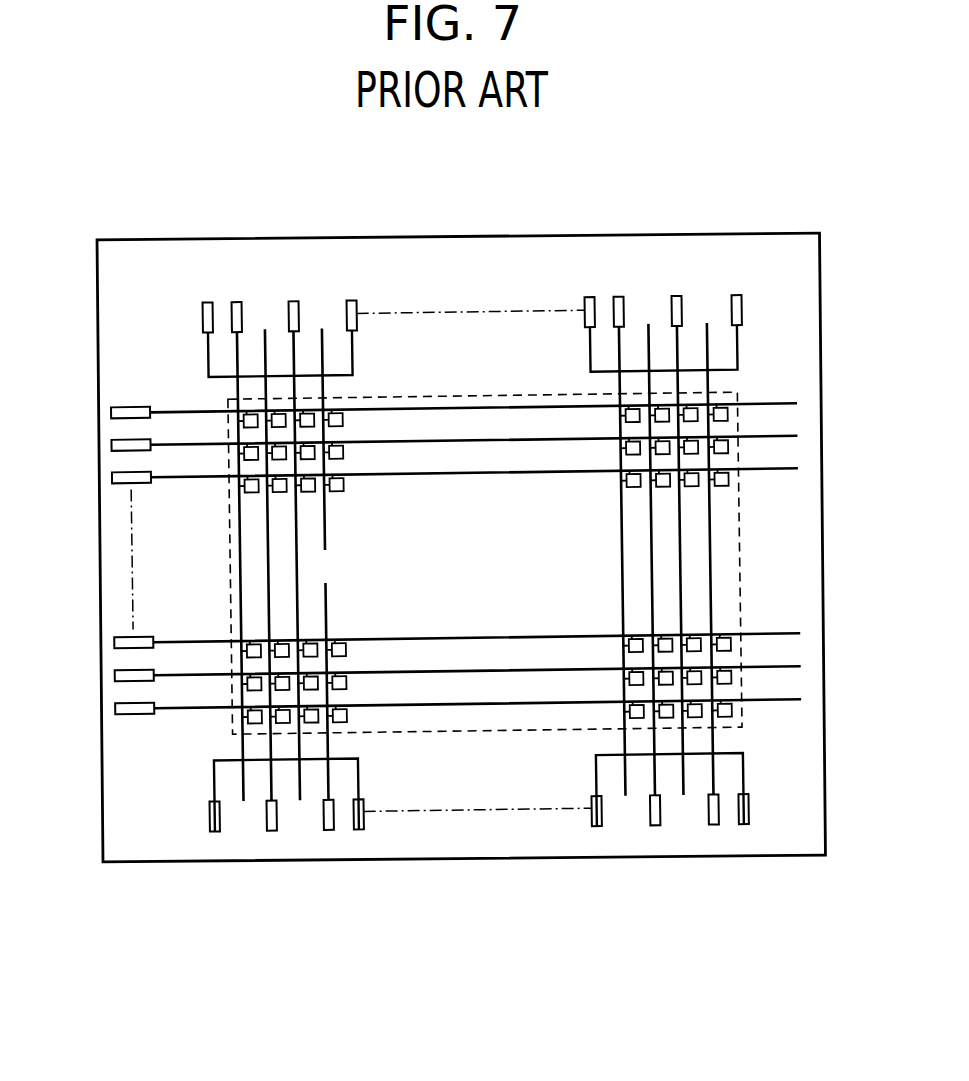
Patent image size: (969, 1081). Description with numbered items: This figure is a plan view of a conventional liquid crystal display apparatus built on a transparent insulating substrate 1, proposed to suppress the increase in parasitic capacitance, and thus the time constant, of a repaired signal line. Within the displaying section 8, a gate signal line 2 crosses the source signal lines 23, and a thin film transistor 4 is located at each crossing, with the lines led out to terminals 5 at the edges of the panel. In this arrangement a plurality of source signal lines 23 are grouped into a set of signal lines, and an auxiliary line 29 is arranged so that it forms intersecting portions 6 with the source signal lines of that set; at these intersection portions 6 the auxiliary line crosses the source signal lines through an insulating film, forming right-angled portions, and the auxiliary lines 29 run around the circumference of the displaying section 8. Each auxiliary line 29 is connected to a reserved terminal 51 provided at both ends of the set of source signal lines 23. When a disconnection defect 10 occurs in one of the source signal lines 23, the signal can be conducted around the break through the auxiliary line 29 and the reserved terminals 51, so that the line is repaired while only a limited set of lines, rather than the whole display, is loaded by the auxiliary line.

The transparent insulating substrate 1 is at (788, 508).
The gate signal line 2 is at (769, 639).
The thin film transistor 4 is at (731, 716).
The terminals 5 is at (297, 298).
The intersection portions 6 is at (322, 369).
The displaying section 8 is at (740, 574).
The disconnection defect 10 is at (325, 561).
The source signal lines 23 is at (238, 575).
The auxiliary lines 29 is at (355, 371).
The reserved terminals 51 is at (211, 296).